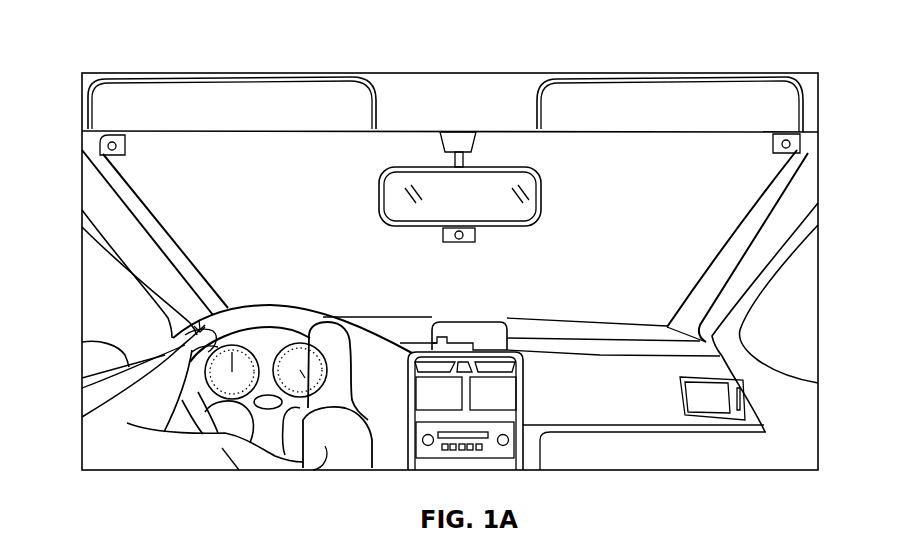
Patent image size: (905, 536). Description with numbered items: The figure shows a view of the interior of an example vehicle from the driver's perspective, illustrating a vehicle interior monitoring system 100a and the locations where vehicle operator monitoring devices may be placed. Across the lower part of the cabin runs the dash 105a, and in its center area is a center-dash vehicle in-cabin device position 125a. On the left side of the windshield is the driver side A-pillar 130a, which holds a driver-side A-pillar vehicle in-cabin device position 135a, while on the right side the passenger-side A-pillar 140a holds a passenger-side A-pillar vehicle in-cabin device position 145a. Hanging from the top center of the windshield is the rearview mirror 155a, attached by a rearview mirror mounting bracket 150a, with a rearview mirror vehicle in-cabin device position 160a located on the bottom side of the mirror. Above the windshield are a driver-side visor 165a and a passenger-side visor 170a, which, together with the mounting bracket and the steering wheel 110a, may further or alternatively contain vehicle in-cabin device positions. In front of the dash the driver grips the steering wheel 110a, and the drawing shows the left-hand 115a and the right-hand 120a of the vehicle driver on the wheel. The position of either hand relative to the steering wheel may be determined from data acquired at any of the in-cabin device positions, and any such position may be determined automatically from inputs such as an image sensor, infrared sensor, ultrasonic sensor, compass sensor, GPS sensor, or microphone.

The vehicle interior monitoring system 100a is at (217, 52).
The dash 105a is at (578, 413).
The steering wheel 110a is at (243, 306).
The left-hand 115a is at (164, 357).
The right-hand 120a is at (340, 340).
The center-dash vehicle in-cabin device position 125a is at (488, 330).
The driver side A-pillar 130a is at (105, 203).
The driver-side A-pillar vehicle in-cabin device position 135a is at (102, 146).
The passenger-side A-pillar 140a is at (806, 222).
The passenger-side A-pillar vehicle in-cabin device position 145a is at (800, 141).
The rearview mirror mounting bracket 150a is at (453, 138).
The rearview mirror 155a is at (500, 185).
The rearview mirror vehicle in-cabin device position 160a is at (467, 243).
The driver-side visor 165a is at (293, 105).
The passenger-side visor 170a is at (670, 80).